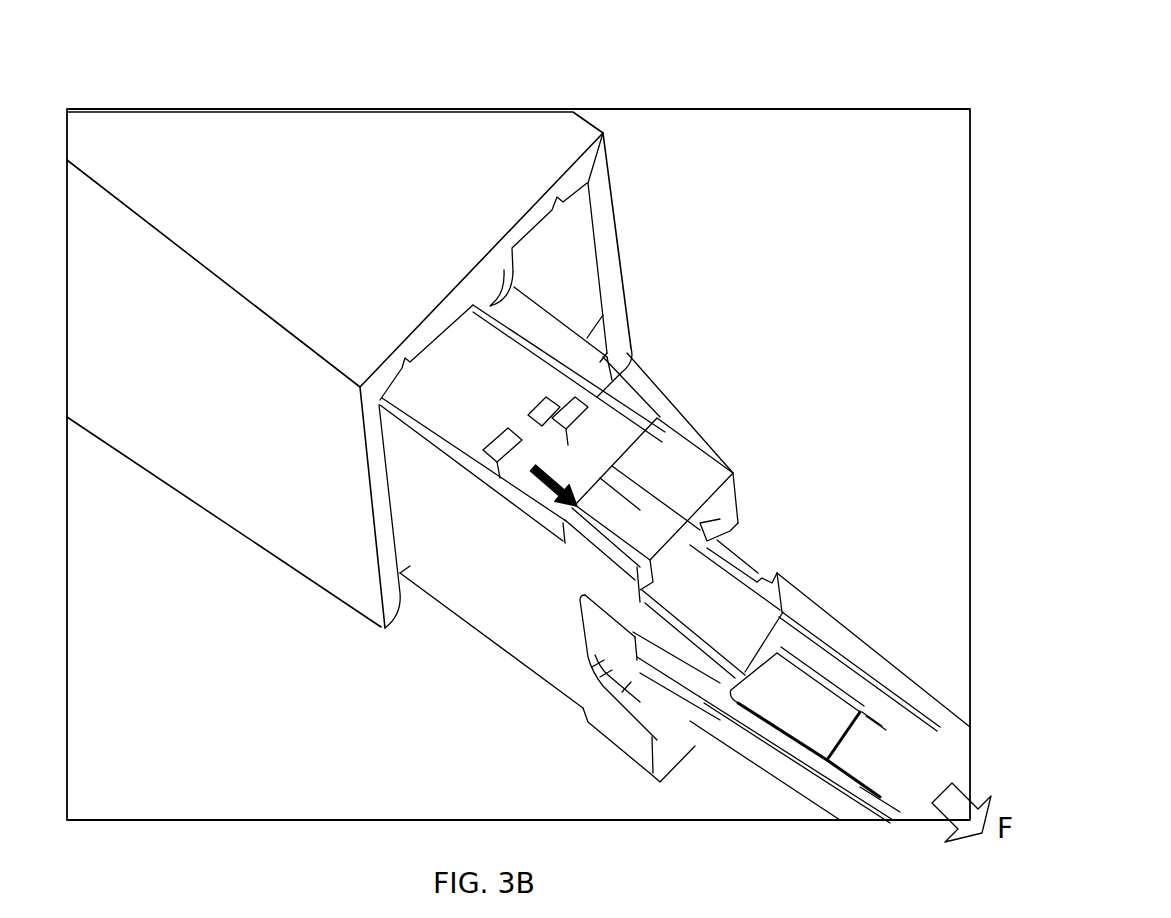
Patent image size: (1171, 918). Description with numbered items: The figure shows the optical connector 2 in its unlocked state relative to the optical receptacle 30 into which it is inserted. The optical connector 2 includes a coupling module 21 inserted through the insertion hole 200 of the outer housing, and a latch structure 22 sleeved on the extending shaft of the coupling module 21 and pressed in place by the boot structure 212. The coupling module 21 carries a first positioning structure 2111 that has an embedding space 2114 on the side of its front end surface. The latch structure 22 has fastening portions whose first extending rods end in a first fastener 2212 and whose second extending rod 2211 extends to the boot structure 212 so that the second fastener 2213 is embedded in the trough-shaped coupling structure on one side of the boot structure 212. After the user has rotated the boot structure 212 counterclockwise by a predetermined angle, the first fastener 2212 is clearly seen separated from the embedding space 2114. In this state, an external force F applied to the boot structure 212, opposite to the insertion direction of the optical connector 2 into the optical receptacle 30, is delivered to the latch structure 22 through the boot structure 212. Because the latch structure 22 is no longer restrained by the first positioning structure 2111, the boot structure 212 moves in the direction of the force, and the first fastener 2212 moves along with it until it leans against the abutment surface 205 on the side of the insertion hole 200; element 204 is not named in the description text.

The optical receptacle 30 is at (778, 103).
The optical connector 2 is at (473, 628).
The coupling module 21 is at (873, 678).
The latch structure 22 is at (663, 663).
The insertion hole 200 is at (705, 540).
The protrusion 204 is at (542, 402).
The abutment surface 205 is at (575, 506).
The boot structure 212 is at (780, 750).
The first positioning structure 2111 is at (607, 437).
The embedding space 2114 is at (560, 420).
The second extending rod 2211 is at (815, 660).
The first fastener 2212 is at (515, 452).
The second fastener 2213 is at (860, 758).